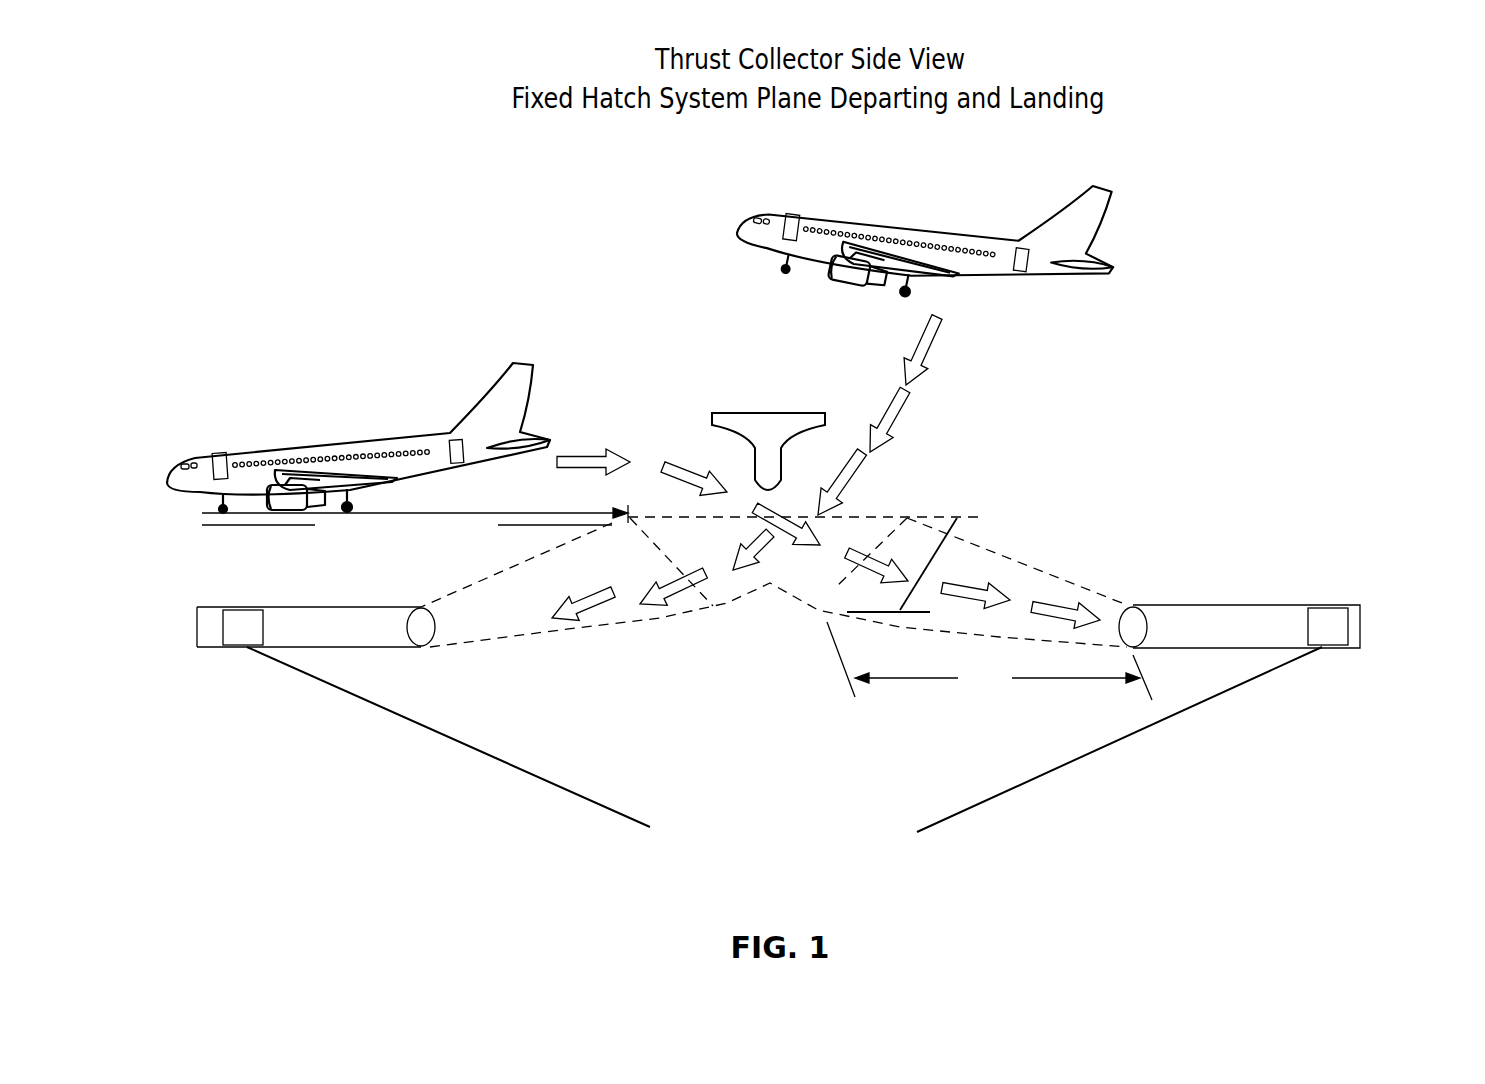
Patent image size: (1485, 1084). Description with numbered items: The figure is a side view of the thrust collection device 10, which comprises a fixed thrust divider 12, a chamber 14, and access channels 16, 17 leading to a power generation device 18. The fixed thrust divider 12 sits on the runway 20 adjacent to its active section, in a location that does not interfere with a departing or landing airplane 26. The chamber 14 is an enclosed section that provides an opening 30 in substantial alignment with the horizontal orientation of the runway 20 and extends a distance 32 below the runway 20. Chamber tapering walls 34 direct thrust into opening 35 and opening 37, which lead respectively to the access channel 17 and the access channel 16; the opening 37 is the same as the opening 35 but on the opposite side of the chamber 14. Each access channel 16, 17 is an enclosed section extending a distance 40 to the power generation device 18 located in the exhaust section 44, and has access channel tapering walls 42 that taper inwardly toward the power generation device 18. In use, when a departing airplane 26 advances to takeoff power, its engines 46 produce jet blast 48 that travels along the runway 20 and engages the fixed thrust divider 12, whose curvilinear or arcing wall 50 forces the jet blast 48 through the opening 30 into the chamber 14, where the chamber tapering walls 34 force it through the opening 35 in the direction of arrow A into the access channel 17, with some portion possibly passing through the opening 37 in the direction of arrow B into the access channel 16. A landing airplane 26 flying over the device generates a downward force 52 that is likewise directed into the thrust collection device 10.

The thrust collection device 10 is at (1157, 372).
The fixed thrust divider 12 is at (774, 412).
The chamber 14 is at (778, 597).
The access channel 16 is at (495, 622).
The access channel 17 is at (973, 613).
The power generation device 18 is at (827, 857).
The runway 20 is at (297, 533).
The airplane 26 is at (213, 447).
The opening 30 is at (652, 505).
The distance 32 is at (940, 555).
The chamber tapering walls 34 is at (705, 593).
The opening 35 is at (858, 573).
The opening 37 is at (645, 565).
The distance 40 is at (989, 661).
The access channel tapering walls 42 is at (1042, 568).
The exhaust section 44 is at (235, 632).
The engines 46 is at (262, 500).
The jet blast 48 is at (577, 455).
The arcing wall 50 is at (752, 452).
The downward force 52 is at (938, 335).